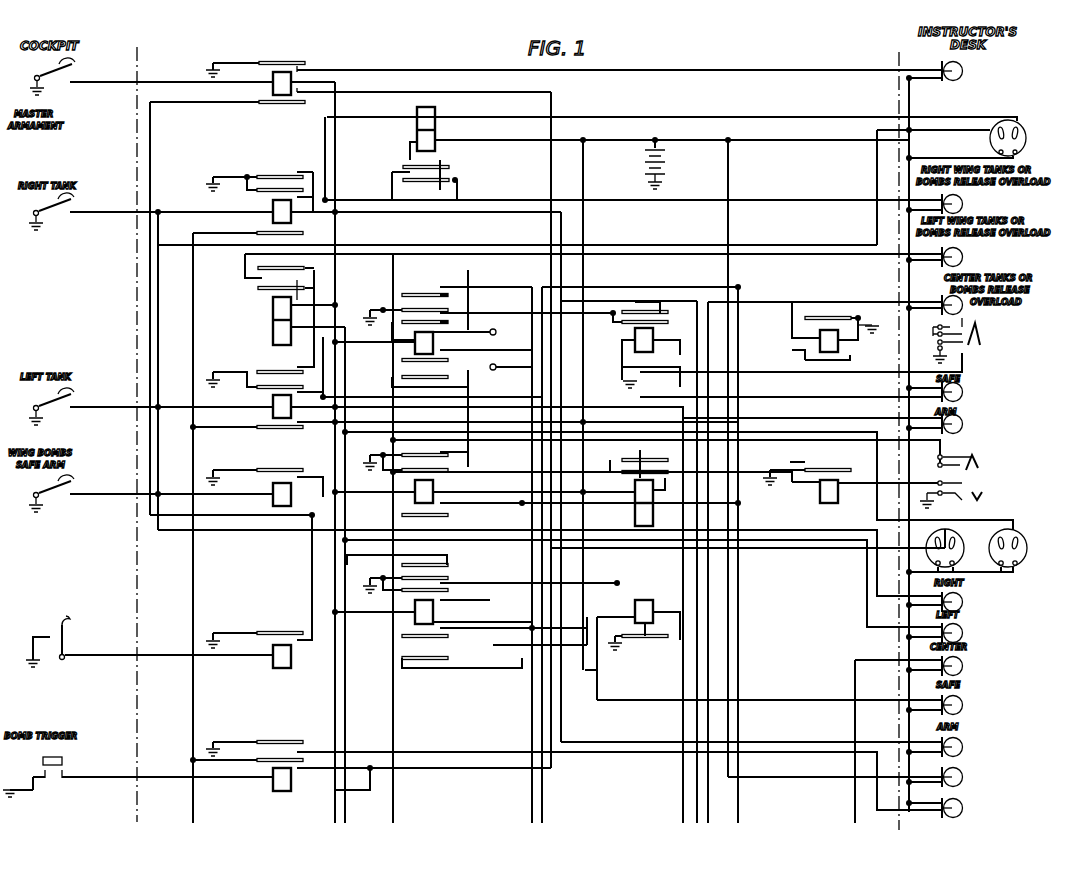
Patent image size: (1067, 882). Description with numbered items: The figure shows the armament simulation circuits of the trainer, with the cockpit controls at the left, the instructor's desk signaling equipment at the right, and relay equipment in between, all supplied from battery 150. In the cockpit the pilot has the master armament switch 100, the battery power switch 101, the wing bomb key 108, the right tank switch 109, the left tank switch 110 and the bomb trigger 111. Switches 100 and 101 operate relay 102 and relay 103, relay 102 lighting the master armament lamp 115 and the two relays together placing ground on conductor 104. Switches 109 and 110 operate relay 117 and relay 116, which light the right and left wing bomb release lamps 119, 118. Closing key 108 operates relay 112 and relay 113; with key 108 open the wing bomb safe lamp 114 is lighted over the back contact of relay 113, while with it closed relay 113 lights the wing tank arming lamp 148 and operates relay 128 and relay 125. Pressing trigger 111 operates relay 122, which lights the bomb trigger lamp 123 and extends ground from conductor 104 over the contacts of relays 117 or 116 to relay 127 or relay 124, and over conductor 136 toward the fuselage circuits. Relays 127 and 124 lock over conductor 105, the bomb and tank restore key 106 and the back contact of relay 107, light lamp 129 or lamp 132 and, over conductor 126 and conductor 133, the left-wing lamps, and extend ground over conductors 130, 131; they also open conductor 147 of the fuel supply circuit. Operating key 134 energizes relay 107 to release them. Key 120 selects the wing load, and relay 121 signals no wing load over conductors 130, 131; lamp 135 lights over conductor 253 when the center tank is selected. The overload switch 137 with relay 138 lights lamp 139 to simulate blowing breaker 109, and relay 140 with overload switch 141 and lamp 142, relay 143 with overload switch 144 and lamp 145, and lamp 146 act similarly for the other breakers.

The master armament switch 100 is at (55, 78).
The battery power switch 101 is at (66, 635).
The relay 102 is at (282, 96).
The relay 103 is at (284, 668).
The conductor 104 is at (550, 175).
The conductor 105 is at (394, 806).
The bomb and tank restore key 106 is at (972, 455).
The relay 107 is at (826, 478).
The wing bomb key 108 is at (75, 486).
The right tank switch 109 is at (60, 208).
The left tank switch 110 is at (60, 403).
The bomb trigger 111 is at (62, 759).
The relay 112 is at (280, 482).
The relay 113 is at (415, 492).
The wing bomb safe lamp 114 is at (966, 700).
The master armament lamp 115 is at (950, 82).
The relay 116 is at (280, 393).
The relay 117 is at (280, 198).
The left wing bomb release lamp 118 is at (966, 610).
The right wing bomb release lamp 119 is at (966, 640).
The key 120 is at (985, 336).
The relay 121 is at (826, 328).
The relay 122 is at (284, 791).
The bomb trigger lamp 123 is at (945, 816).
The relay 124 is at (415, 618).
The relay 125 is at (645, 640).
The conductor 126 is at (695, 718).
The relay 127 is at (420, 330).
The relay 128 is at (645, 326).
The lamp 129 is at (968, 420).
The conductor 130 is at (533, 806).
The conductor 131 is at (739, 806).
The lamp 132 is at (968, 437).
The conductor 133 is at (682, 806).
The key 134 is at (950, 500).
The lamp 135 is at (968, 668).
The conductor 136 is at (192, 806).
The overload switch 137 is at (990, 147).
The relay 138 is at (436, 114).
The lamp 139 is at (964, 204).
The relay 140 is at (273, 333).
The overload switch 141 is at (926, 556).
The lamp 142 is at (964, 257).
The relay 143 is at (654, 504).
The overload switch 144 is at (1024, 536).
The lamp 145 is at (966, 775).
The lamp 146 is at (942, 300).
The conductor 147 is at (346, 806).
The wing tank arming lamp 148 is at (966, 752).
The battery 150 is at (664, 160).
The conductor 253 is at (854, 806).